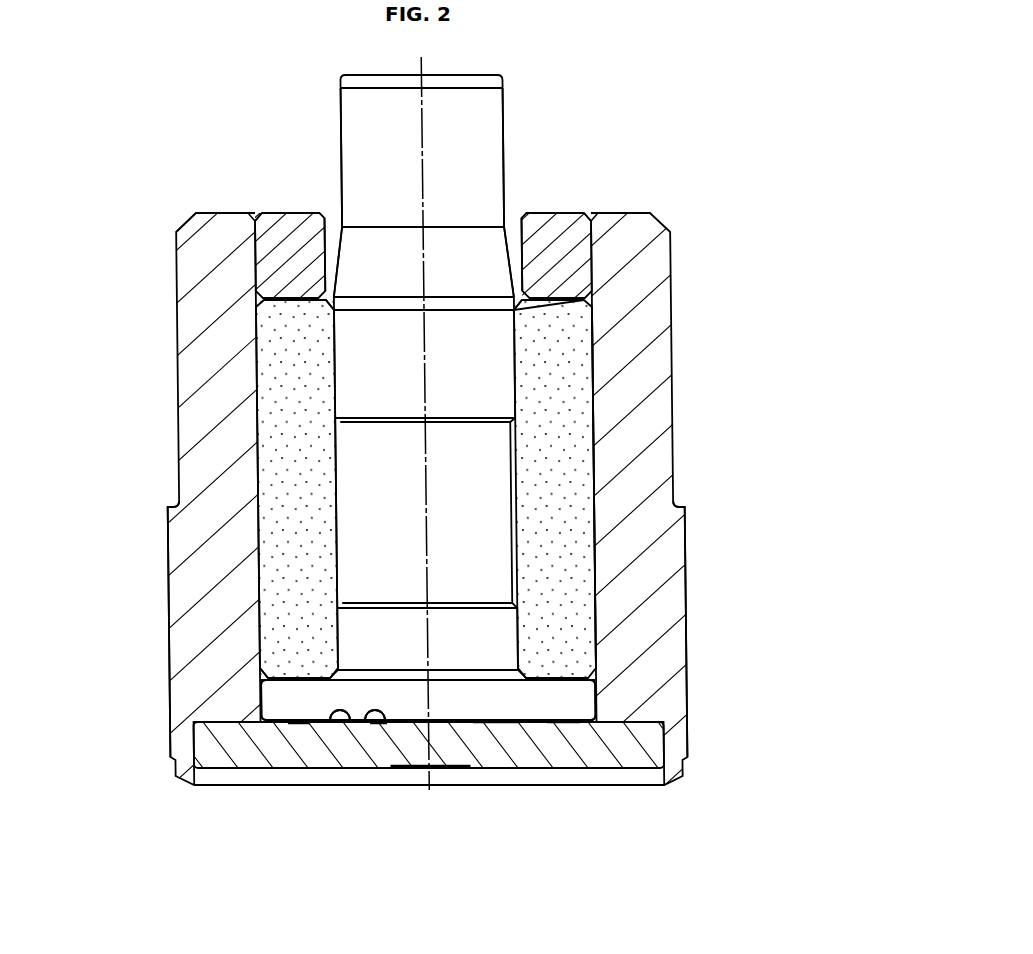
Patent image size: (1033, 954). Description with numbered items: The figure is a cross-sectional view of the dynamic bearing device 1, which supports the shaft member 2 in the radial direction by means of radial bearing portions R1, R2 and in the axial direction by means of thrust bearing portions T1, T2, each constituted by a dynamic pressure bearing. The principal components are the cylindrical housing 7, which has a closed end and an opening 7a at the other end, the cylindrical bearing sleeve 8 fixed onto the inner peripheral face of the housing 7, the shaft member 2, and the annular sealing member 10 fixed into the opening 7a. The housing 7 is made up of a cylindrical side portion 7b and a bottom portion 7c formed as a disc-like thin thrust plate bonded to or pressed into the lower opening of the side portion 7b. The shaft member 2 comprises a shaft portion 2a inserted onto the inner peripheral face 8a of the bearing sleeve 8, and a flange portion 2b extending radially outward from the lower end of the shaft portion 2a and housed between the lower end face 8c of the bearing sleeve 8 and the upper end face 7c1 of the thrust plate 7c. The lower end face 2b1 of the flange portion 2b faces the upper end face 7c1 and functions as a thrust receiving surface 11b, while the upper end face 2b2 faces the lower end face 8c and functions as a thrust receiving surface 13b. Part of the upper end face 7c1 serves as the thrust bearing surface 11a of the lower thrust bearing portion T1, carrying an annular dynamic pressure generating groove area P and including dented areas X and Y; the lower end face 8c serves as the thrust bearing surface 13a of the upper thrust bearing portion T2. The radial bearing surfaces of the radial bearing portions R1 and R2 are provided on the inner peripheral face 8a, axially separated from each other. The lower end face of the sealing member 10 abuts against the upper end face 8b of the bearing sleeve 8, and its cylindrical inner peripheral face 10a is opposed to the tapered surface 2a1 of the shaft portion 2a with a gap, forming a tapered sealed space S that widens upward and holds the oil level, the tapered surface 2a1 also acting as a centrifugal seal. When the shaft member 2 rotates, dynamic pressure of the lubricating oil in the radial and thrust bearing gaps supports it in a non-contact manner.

The dynamic bearing device 1 is at (647, 130).
The shaft member 2 is at (505, 100).
The shaft portion 2a is at (466, 105).
The tapered surface 2a1 is at (630, 213).
The flange portion 2b is at (572, 698).
The lower end face of the flange portion 2b1 is at (537, 725).
The upper end face of the flange portion 2b2 is at (567, 673).
The housing 7 is at (672, 228).
The opening 7a is at (258, 212).
The side portion 7b is at (672, 562).
The bottom portion (thrust plate) 7c is at (607, 757).
The upper end face of the thrust plate 7c1 is at (377, 712).
The bearing sleeve 8 is at (592, 372).
The inner peripheral face of the bearing sleeve 8a is at (515, 382).
The upper end face of the bearing sleeve 8b is at (314, 294).
The lower end face of the bearing sleeve 8c is at (286, 695).
The sealing member 10 is at (583, 277).
The inner peripheral face of the sealing member 10a is at (515, 235).
The thrust bearing surface 11a is at (402, 771).
The thrust receiving surface 11b is at (499, 776).
The thrust bearing surface 13a is at (204, 688).
The thrust receiving surface 13b is at (553, 647).
The sealed space S is at (333, 228).
The first radial bearing portion R1 is at (342, 364).
The second radial bearing portion R2 is at (346, 619).
The lower thrust bearing portion T1 is at (292, 723).
The upper thrust bearing portion T2 is at (307, 673).
The dynamic pressure generating groove area P is at (345, 712).
The dented area X is at (470, 718).
The dented area Y is at (298, 713).